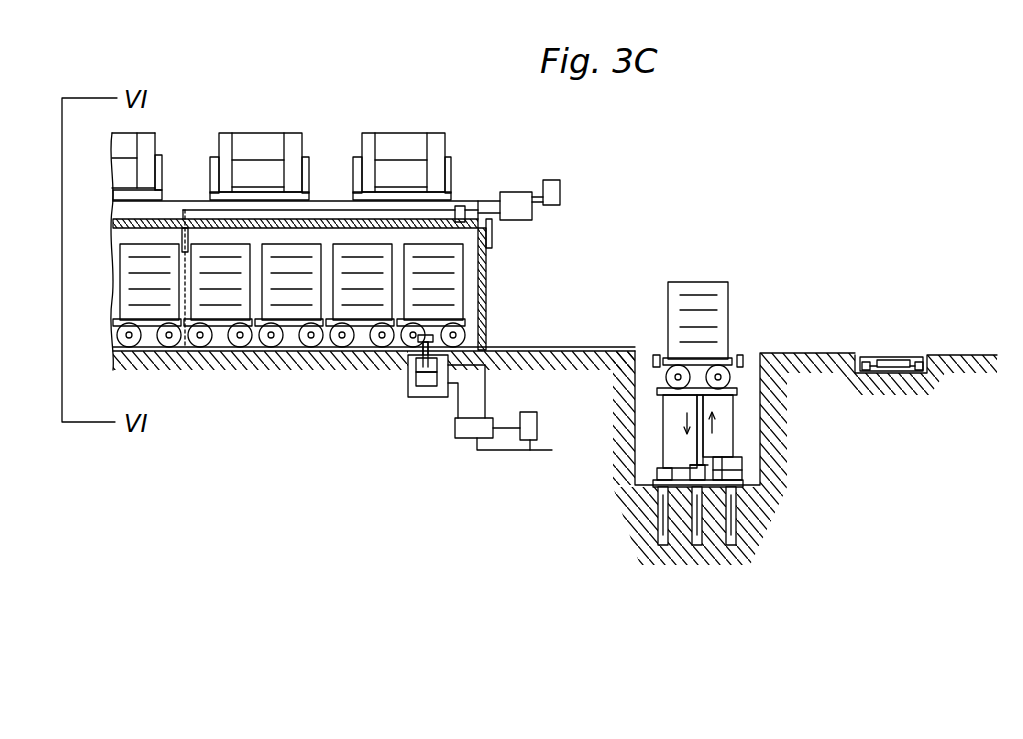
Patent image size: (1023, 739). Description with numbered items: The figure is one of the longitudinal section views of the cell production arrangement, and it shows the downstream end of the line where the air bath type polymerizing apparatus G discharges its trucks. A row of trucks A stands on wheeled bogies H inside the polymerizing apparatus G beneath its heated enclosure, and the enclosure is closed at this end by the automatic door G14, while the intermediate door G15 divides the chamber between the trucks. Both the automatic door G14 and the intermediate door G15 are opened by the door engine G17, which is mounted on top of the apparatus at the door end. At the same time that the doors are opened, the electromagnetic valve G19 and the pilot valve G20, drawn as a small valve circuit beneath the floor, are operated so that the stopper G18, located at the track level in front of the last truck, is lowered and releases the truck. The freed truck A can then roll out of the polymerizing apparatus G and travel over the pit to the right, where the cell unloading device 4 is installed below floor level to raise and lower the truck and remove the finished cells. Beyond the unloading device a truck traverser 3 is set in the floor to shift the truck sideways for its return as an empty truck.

The air bath type polymerizing apparatus G is at (432, 222).
The automatic door G14 is at (483, 286).
The intermediate door G15 is at (203, 338).
The door engine G17 is at (523, 208).
The stopper G18 is at (416, 362).
The electromagnetic valve G19 is at (523, 418).
The pilot valve G20 is at (466, 430).
The car A is at (295, 307).
The bogie H is at (365, 327).
The truck traverser 3 is at (913, 355).
The cell unloading device 4 is at (725, 433).